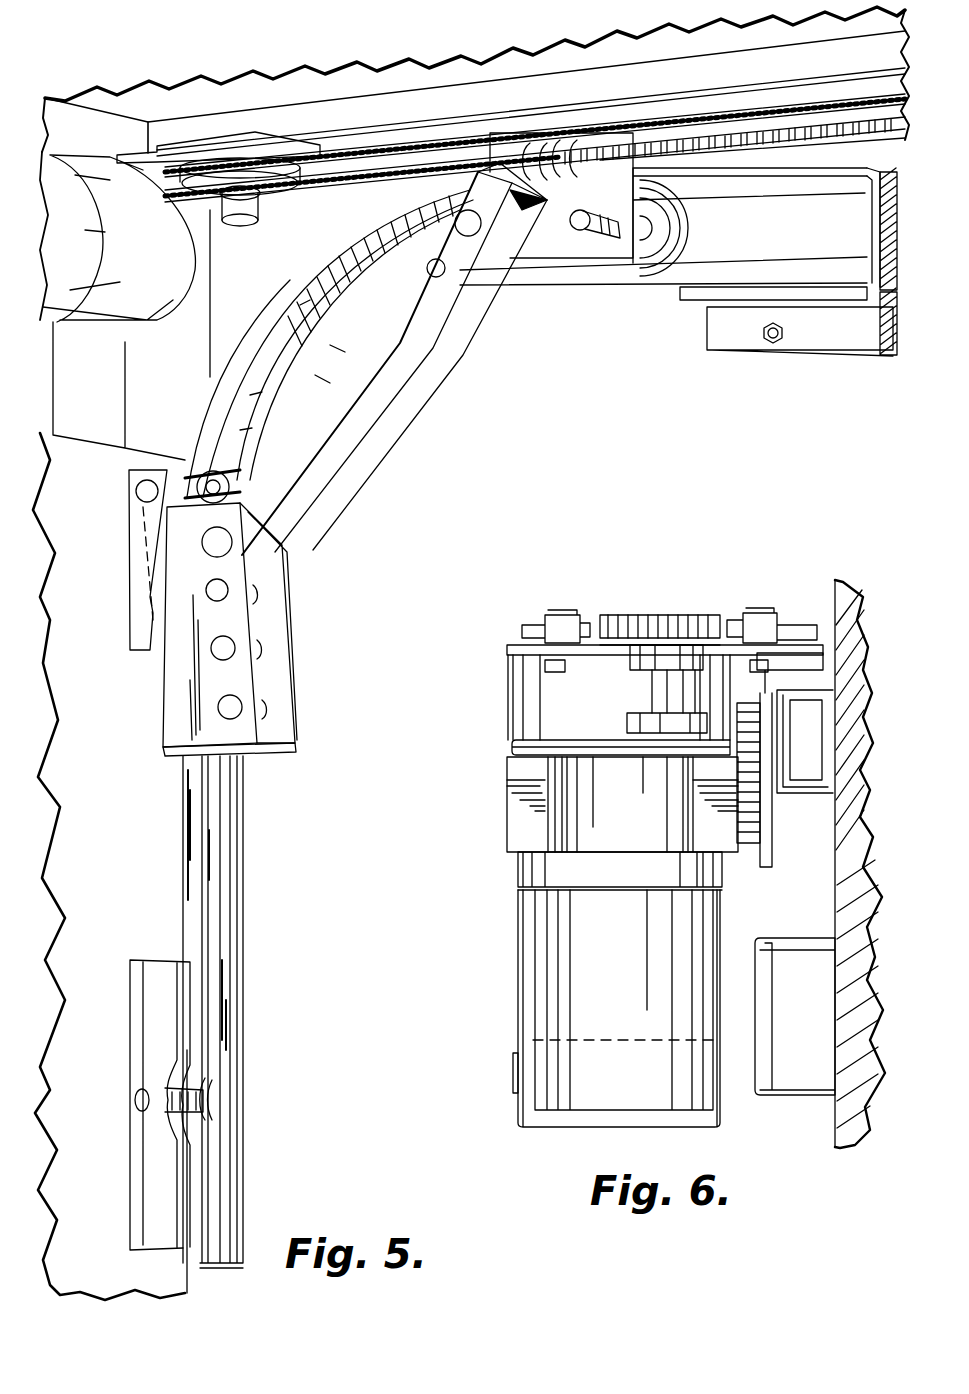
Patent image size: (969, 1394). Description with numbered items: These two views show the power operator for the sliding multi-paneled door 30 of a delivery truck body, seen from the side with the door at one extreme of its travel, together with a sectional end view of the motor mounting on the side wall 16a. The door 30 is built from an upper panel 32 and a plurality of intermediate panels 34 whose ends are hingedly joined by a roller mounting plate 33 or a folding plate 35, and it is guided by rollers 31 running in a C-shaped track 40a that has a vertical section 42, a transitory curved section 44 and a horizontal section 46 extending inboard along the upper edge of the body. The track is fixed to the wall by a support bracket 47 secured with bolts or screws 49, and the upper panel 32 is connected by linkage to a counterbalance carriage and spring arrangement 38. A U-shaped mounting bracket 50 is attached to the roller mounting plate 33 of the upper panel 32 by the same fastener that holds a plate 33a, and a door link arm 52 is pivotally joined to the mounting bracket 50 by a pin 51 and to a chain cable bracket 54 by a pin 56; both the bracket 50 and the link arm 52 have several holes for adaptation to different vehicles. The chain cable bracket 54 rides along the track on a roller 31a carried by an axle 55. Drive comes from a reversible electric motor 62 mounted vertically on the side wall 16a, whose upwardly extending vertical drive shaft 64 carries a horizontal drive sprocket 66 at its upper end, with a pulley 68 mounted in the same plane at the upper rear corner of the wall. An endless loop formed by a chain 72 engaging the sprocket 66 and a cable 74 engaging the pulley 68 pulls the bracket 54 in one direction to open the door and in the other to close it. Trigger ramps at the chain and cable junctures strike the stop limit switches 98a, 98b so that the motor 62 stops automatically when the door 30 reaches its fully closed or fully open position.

In FIG. 6, the side wall 16a is at (857, 707).
In FIG. 5, the sliding multi-paneled door 30 is at (143, 436).
In FIG. 5, the rollers 31 is at (222, 462).
In FIG. 5, the roller 31a is at (690, 237).
In FIG. 5, the upper panel 32 is at (140, 869).
In FIG. 5, the mounting plate 33 is at (143, 547).
In FIG. 5, the plate 33a is at (137, 593).
In FIG. 5, the intermediate panels 34 is at (95, 1196).
In FIG. 5, the folding plate 35 is at (107, 410).
In FIG. 5, the counterbalance carriage and spring arrangement 38 is at (109, 354).
In FIG. 5, the C-shaped track 40a is at (265, 811).
In FIG. 5, the vertical section 42 is at (247, 913).
In FIG. 5, the transitory curved section 44 is at (287, 277).
In FIG. 6, the transitory curved section 44 is at (833, 733).
In FIG. 5, the horizontal section 46 is at (640, 273).
In FIG. 5, the support bracket 47 is at (855, 340).
In FIG. 5, the bolts or screws 49 is at (787, 333).
In FIG. 5, the U-shaped mounting bracket 50 is at (278, 626).
In FIG. 5, the pin 51 is at (217, 542).
In FIG. 5, the door link arm 52 is at (400, 370).
In FIG. 5, the chain cable bracket 54 is at (548, 243).
In FIG. 5, the axle 55 is at (598, 240).
In FIG. 5, the pin 56 is at (457, 217).
In FIG. 6, the reversible electric motor 62 is at (620, 966).
In FIG. 6, the vertical drive shaft 64 is at (653, 685).
In FIG. 6, the drive sprocket 66 is at (677, 600).
In FIG. 5, the pulley 68 is at (268, 200).
In FIG. 5, the chain 72 is at (850, 143).
In FIG. 6, the chain 72 is at (623, 617).
In FIG. 5, the cable 74 is at (372, 180).
In FIG. 6, the stop limit switch 98a is at (560, 627).
In FIG. 6, the stop limit switch 98b is at (757, 622).